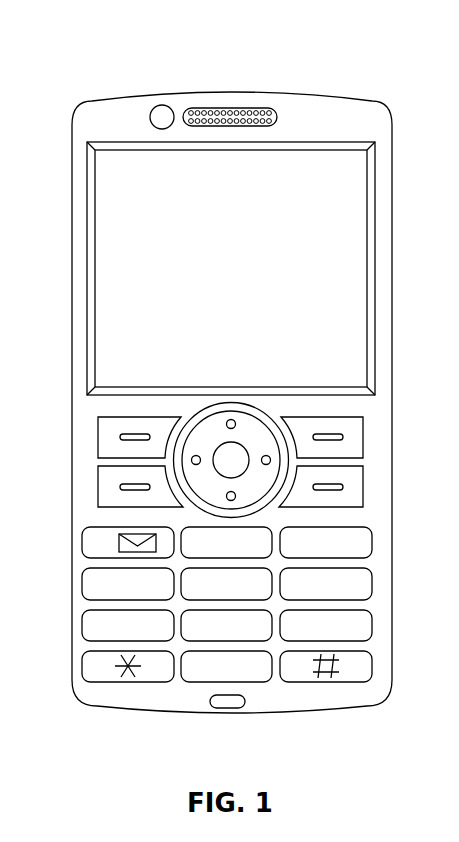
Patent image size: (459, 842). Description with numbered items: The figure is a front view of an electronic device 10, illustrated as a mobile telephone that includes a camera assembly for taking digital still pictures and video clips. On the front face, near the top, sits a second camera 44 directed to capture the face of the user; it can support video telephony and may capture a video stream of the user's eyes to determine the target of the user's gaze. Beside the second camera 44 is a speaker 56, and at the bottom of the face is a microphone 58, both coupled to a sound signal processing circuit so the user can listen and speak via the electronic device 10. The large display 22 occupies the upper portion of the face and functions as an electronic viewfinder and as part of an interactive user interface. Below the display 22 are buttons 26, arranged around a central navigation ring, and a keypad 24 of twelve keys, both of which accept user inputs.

The electronic device 10 is at (81, 79).
The display 22 is at (110, 254).
The keypad 24 is at (147, 696).
The buttons 26 is at (384, 463).
The second camera 44 is at (160, 104).
The speaker 56 is at (232, 108).
The microphone 58 is at (232, 703).